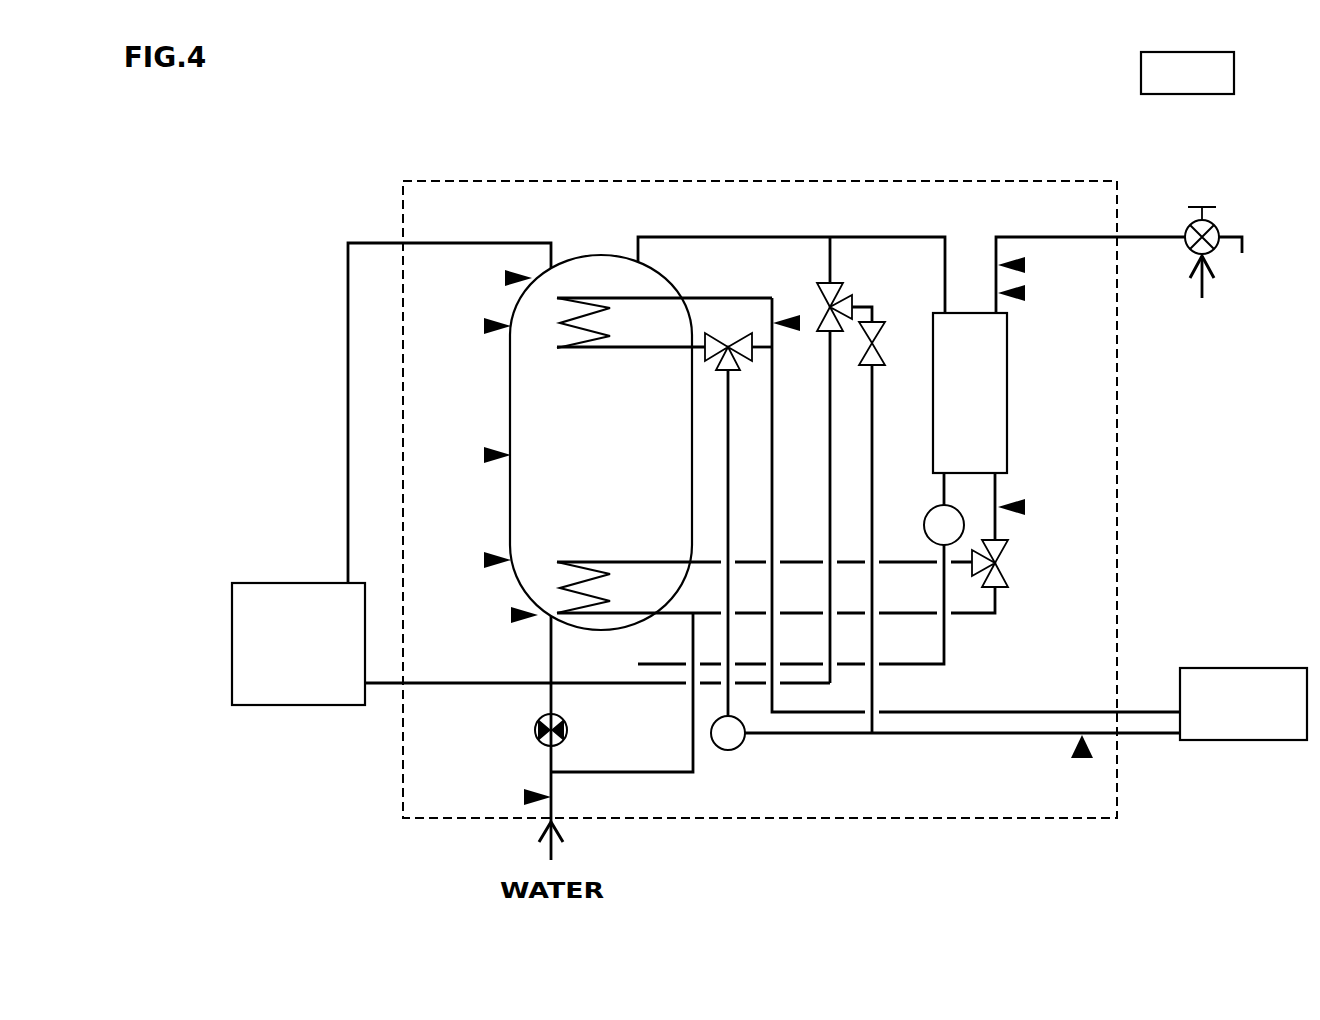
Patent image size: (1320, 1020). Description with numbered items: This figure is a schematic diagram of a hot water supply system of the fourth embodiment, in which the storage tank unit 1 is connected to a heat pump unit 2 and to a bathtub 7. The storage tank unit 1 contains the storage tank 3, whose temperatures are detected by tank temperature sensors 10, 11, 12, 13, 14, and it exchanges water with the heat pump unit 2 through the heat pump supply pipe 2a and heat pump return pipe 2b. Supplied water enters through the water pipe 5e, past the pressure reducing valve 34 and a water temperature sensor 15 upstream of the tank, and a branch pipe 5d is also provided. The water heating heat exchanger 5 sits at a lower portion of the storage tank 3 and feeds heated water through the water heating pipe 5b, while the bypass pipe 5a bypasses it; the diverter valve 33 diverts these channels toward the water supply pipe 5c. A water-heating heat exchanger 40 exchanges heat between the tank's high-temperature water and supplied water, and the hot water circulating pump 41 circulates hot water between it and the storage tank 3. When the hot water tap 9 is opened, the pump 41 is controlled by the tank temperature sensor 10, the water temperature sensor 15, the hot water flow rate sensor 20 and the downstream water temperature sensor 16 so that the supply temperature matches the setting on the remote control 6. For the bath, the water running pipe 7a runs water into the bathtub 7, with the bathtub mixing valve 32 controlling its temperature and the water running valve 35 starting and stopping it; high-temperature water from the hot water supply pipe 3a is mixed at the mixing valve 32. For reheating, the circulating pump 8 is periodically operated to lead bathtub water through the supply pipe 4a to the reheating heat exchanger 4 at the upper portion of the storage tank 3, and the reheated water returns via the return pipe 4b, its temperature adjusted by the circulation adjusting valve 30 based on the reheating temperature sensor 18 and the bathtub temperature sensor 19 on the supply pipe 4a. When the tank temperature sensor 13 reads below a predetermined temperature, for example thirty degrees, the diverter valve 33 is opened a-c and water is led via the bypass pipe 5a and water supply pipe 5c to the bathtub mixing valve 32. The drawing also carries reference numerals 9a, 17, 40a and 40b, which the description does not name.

The storage tank unit 1 is at (403, 212).
The heat pump unit 2 is at (297, 583).
The heat pump supply pipe 2a is at (450, 686).
The heat pump return pipe 2b is at (348, 432).
The storage tank 3 is at (510, 397).
The hot water supply pipe 3a is at (738, 237).
The reheating heat exchanger 4 is at (597, 298).
The supply pipe 4a is at (731, 472).
The return pipe 4b is at (776, 472).
The water heating heat exchanger 5 is at (560, 552).
The bypass pipe 5a is at (975, 613).
The water heating pipe 5b is at (890, 560).
The water supply pipe 5c is at (1000, 490).
The branch pipe 5d is at (622, 708).
The water pipe 5e is at (551, 655).
The remote control 6 is at (1141, 65).
The bathtub 7 is at (1245, 740).
The water running pipe 7a is at (874, 388).
The circulating pump 8 is at (744, 742).
The hot water tap 9 is at (1202, 207).
The mixing valve pipe 9a is at (1010, 237).
The tank temperature sensor 10 is at (500, 278).
The tank temperature sensor 11 is at (479, 326).
The tank temperature sensor 12 is at (479, 455).
The tank temperature sensor 13 is at (479, 560).
The tank temperature sensor 14 is at (505, 615).
The water temperature sensor 15 is at (520, 797).
The water temperature sensor 16 is at (1028, 507).
The temperature sensor 17 is at (1028, 293).
The reheating temperature sensor 18 is at (788, 338).
The bathtub temperature sensor 19 is at (1082, 763).
The hot water flow rate sensor 20 is at (1028, 265).
The circulation adjusting valve 30 is at (735, 334).
The bathtub mixing valve 32 is at (828, 262).
The diverter valve 33 is at (1010, 565).
The pressure reducing valve 34 is at (535, 730).
The water running valve 35 is at (875, 322).
The water-heating heat exchanger 40 is at (1007, 390).
The unit inlet pipe 40a is at (890, 237).
The unit outlet pipe 40b is at (944, 664).
The hot water circulating pump 41 is at (928, 513).